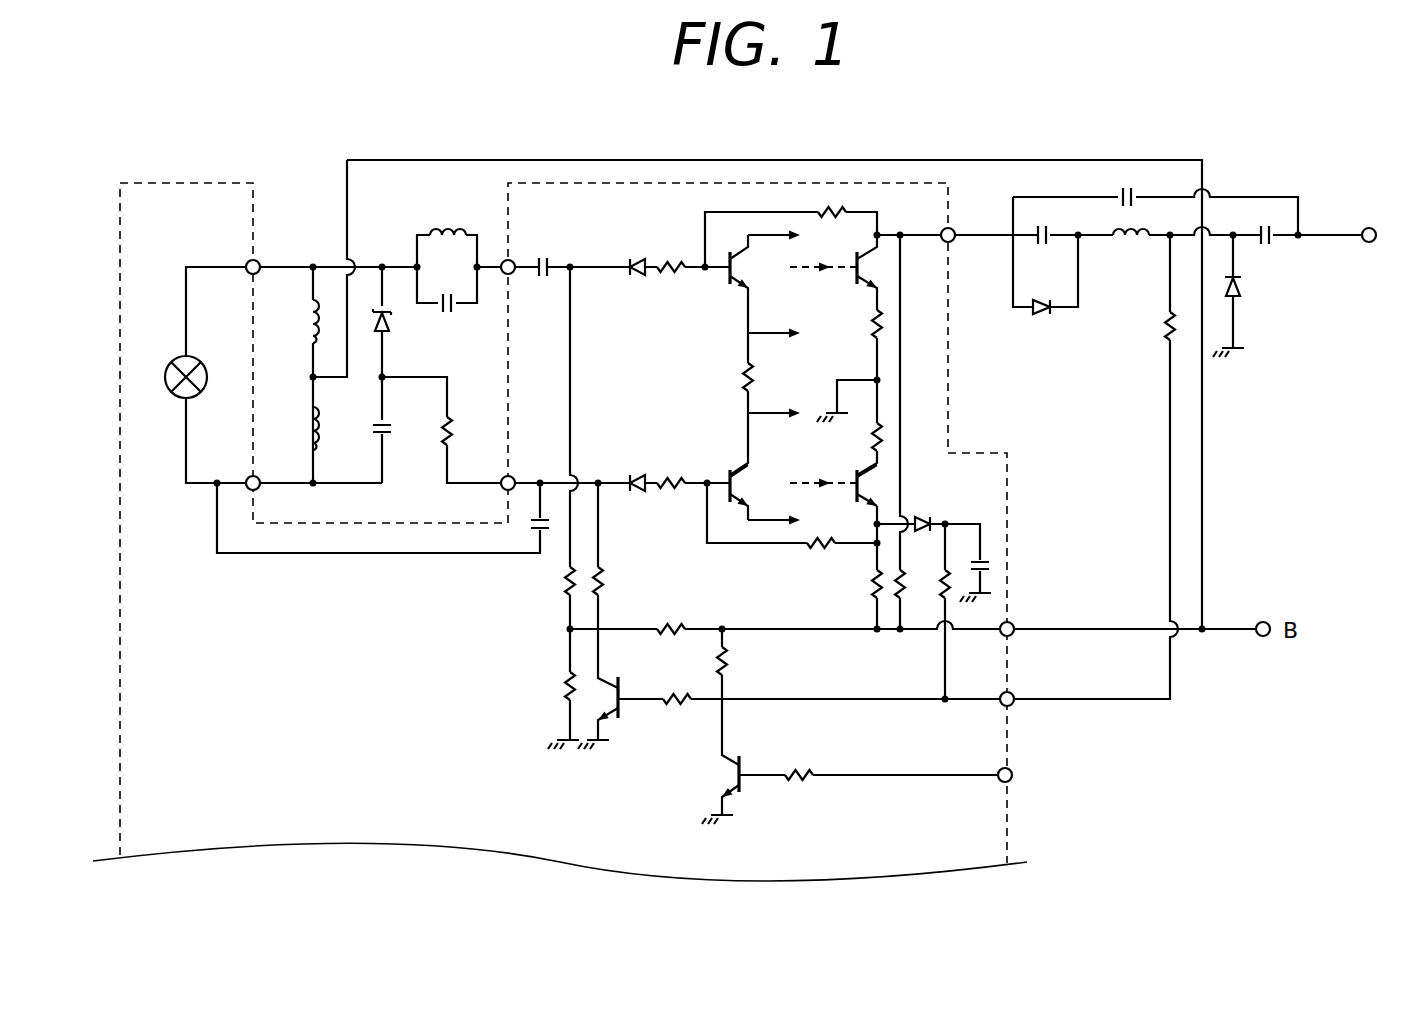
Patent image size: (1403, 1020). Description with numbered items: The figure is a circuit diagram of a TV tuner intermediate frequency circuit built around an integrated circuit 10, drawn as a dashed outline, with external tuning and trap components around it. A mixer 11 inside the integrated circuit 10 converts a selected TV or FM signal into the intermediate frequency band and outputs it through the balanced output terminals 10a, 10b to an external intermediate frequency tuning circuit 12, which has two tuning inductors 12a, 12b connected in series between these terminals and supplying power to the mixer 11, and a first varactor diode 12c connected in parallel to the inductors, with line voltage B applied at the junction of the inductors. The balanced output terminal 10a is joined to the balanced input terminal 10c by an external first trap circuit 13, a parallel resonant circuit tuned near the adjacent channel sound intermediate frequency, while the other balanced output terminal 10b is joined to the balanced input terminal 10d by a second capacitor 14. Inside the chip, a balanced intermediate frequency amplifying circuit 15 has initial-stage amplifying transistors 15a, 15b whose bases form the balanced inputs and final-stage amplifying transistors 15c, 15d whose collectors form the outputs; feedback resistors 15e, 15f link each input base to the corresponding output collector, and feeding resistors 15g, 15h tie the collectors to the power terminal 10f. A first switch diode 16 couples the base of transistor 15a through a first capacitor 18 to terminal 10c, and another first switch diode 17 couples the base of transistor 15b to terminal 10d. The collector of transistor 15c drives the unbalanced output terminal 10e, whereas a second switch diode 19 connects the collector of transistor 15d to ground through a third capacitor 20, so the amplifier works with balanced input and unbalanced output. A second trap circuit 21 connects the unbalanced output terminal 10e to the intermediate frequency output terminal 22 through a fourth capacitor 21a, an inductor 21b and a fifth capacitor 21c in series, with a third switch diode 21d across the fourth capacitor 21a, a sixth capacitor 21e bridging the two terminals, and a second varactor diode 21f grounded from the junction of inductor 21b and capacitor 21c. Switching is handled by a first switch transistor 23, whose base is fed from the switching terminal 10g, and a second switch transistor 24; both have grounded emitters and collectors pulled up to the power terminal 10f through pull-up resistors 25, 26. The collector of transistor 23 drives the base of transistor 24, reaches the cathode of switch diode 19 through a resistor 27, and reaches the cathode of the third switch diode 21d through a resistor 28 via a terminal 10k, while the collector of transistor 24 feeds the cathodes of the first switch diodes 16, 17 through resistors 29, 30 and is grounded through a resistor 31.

The integrated circuit 10 is at (251, 822).
The balanced output terminal 10a is at (249, 260).
The balanced output terminal 10b is at (249, 476).
The balanced input terminal 10c is at (530, 247).
The balanced input terminal 10d is at (530, 463).
The unbalanced output terminal 10e is at (951, 244).
The power terminal 10f is at (1010, 622).
The switching terminal 10g is at (1008, 768).
The terminal 10k is at (1010, 692).
The mixer 11 is at (174, 364).
The intermediate frequency tuning circuit 12 is at (382, 387).
The tuning inductor 12a is at (312, 333).
The tuning inductor 12b is at (312, 422).
The first varactor diode 12c is at (416, 326).
The first trap circuit 13 is at (433, 265).
The second capacitor 14 is at (512, 522).
The intermediate frequency amplifying circuit 15 is at (798, 396).
The amplifying transistor 15a is at (727, 282).
The amplifying transistor 15b is at (727, 478).
The amplifying transistor 15c is at (855, 282).
The amplifying transistor 15d is at (855, 478).
The feedback resistor 15e is at (832, 218).
The feedback resistor 15f is at (812, 548).
The feeding resistor 15g is at (870, 587).
The feeding resistor 15h is at (897, 600).
The first switch diode 16 is at (637, 278).
The first switch diode 17 is at (635, 476).
The first capacitor 18 is at (544, 280).
The second switch diode 19 is at (923, 516).
The third capacitor 20 is at (985, 562).
The second trap circuit 21 is at (1159, 233).
The fourth capacitor 21a is at (1043, 248).
The inductor 21b is at (1126, 246).
The fifth capacitor 21c is at (1270, 248).
The third switch diode 21d is at (1042, 315).
The sixth capacitor 21e is at (1118, 192).
The second varactor diode 21f is at (1238, 292).
The intermediate frequency output terminal 22 is at (1371, 228).
The first switch transistor 23 is at (733, 777).
The second switch transistor 24 is at (620, 692).
The pull-up resistor 25 is at (728, 660).
The pull-up resistor 26 is at (674, 624).
The resistor 27 is at (948, 600).
The resistor 28 is at (1168, 330).
The resistor 29 is at (565, 584).
The resistor 30 is at (602, 578).
The resistor 31 is at (565, 688).